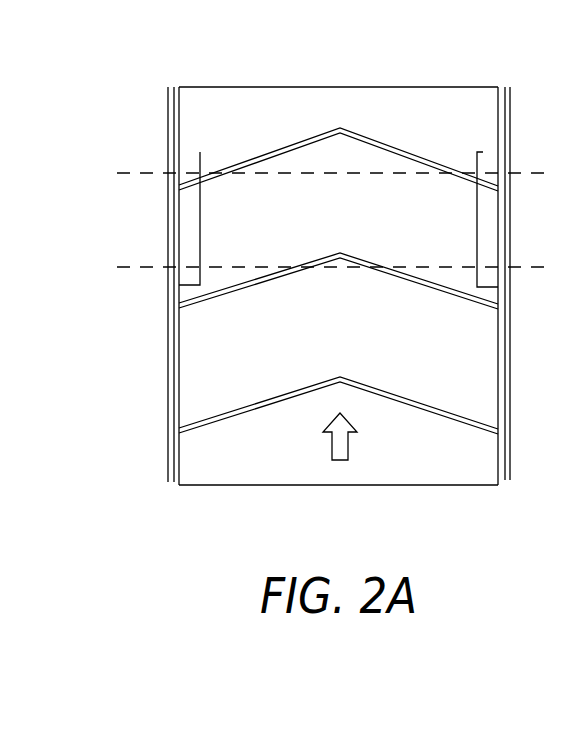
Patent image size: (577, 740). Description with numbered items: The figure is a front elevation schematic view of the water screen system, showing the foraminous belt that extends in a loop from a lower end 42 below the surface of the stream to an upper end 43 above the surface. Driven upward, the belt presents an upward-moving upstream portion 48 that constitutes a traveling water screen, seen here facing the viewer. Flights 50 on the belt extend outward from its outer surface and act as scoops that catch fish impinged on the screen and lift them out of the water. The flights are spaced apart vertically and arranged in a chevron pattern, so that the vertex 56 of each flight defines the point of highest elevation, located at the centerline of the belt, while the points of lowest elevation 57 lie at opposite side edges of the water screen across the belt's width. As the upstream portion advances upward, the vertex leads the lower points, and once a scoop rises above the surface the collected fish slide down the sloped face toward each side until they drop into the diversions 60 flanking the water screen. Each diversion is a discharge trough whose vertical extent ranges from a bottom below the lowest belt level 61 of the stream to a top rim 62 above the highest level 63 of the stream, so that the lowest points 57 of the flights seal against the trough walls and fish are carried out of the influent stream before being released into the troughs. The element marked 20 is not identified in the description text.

The upper end 43 is at (308, 86).
The vertex 56 is at (341, 128).
The diversions 60 is at (490, 222).
The highest level 63 is at (140, 172).
The top rim 62 is at (477, 152).
The lowest belt level 61 is at (146, 265).
The points of lowest elevation 57 is at (180, 300).
The housing side wall 20 is at (192, 368).
The flights 50 is at (207, 420).
The upstream portion 48 is at (487, 388).
The lower end 42 is at (428, 487).